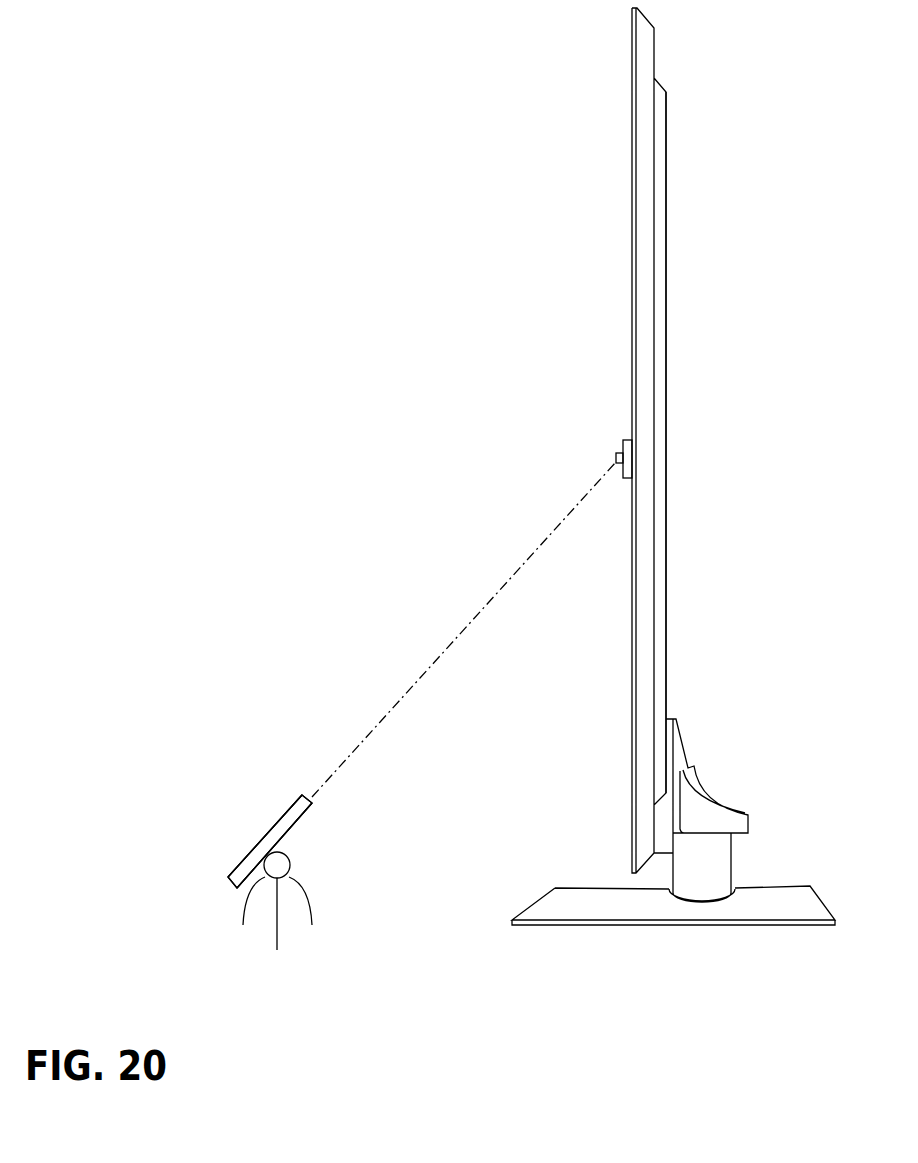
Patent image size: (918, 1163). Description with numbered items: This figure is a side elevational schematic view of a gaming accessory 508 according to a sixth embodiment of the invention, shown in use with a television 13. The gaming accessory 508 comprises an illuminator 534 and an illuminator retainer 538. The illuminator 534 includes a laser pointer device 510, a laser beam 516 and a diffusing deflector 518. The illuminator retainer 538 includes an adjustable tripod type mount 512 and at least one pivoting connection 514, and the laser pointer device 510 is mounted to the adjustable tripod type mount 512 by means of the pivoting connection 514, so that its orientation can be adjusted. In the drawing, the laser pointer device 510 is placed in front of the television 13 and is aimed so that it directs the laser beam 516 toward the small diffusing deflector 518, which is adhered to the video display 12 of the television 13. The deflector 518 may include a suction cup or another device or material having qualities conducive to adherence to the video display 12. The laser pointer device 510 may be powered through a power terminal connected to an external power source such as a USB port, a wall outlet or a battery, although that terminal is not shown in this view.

The video display 12 is at (631, 290).
The television 13 is at (672, 527).
The gaming accessory 508 is at (286, 780).
The laser pointer device 510 is at (277, 820).
The adjustable tripod type mount 512 is at (245, 903).
The pivoting connection 514 is at (291, 862).
The laser beam 516 is at (433, 663).
The diffusing deflector 518 is at (621, 447).
The illuminator 534 is at (248, 850).
The illuminator retainer 538 is at (300, 850).